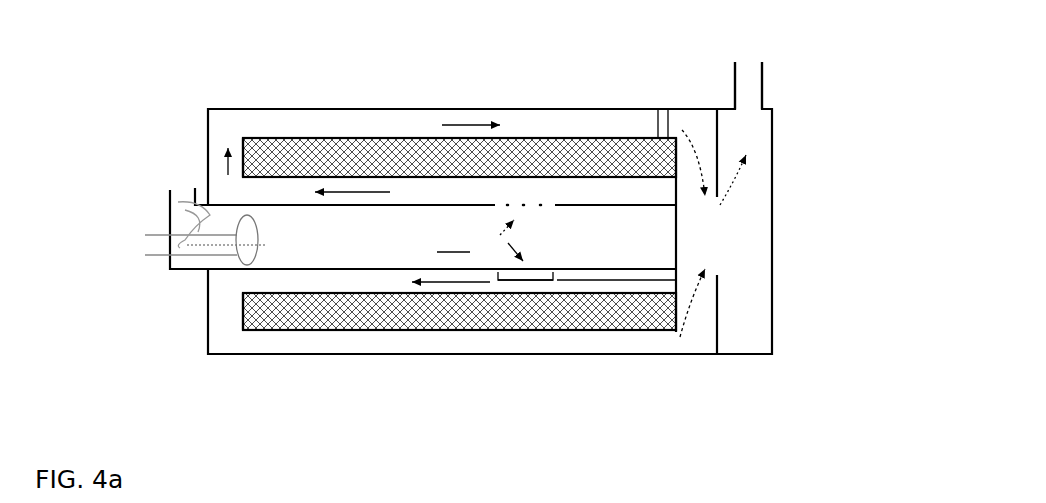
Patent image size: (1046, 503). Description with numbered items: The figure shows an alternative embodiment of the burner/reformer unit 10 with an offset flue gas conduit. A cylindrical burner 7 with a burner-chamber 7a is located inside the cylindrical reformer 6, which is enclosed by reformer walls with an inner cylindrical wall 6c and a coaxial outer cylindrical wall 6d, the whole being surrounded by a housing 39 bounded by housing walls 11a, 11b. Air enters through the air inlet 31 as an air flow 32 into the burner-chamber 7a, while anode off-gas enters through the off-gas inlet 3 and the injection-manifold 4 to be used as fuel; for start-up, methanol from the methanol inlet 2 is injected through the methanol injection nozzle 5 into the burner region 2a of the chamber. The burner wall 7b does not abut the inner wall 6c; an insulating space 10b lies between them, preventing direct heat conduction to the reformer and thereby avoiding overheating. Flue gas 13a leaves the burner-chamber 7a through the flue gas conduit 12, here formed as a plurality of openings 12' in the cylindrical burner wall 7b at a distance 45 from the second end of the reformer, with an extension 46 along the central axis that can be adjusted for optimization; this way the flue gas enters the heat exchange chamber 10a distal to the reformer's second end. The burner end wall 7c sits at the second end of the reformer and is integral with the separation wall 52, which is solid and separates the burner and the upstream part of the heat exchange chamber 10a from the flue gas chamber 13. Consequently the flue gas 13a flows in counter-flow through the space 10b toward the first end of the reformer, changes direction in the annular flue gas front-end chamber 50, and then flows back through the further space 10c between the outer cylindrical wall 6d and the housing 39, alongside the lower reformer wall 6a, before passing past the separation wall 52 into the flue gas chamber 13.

The methanol inlet 2 is at (143, 222).
The burner chamber 2a is at (308, 258).
The off-gas inlet 3 is at (183, 241).
The injection-manifold 4 is at (267, 245).
The methanol injection nozzle 5 is at (268, 250).
The reformer 6 is at (460, 330).
The lower heat exchanger wall 6a is at (287, 313).
The inner cylindrical wall 6c is at (575, 178).
The outer cylindrical wall 6d is at (643, 109).
The burner 7 is at (347, 237).
The burner-chamber 7a is at (453, 242).
The burner wall 7b is at (458, 205).
The burner end wall 7c is at (677, 242).
The burner/reformer unit 10 is at (481, 82).
The heat exchange chamber 10a is at (547, 123).
The space 10b is at (250, 193).
The further space 10c is at (385, 127).
The housing wall 11a is at (262, 138).
The housing partition wall 11b is at (672, 109).
The flue gas conduit 12 is at (543, 123).
The openings 12' is at (536, 262).
The flue gas chamber 13 is at (750, 128).
The flue gas 13a is at (517, 248).
The air inlet 31 is at (182, 185).
The air flow 32 is at (168, 212).
The housing 39 is at (463, 109).
The distance 45 is at (613, 282).
The extension 46 is at (525, 282).
The flue gas front-end chamber 50 is at (213, 137).
The separation wall 52 is at (680, 205).